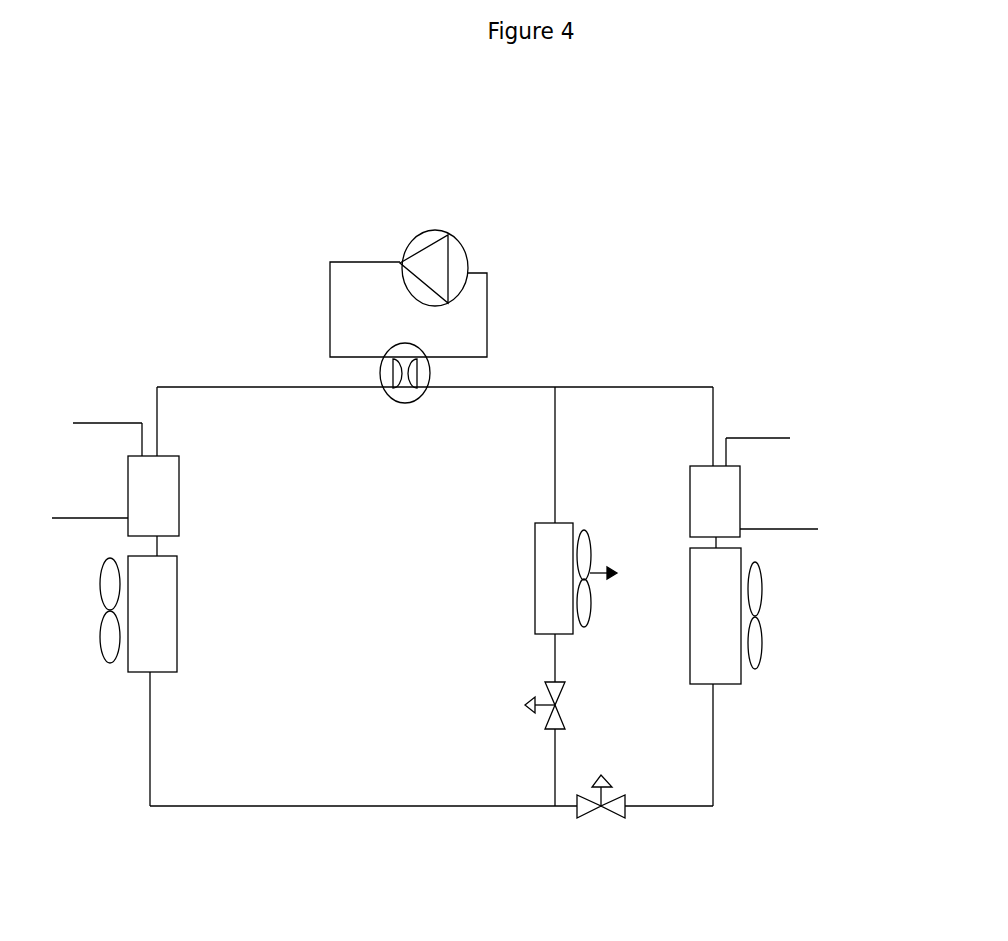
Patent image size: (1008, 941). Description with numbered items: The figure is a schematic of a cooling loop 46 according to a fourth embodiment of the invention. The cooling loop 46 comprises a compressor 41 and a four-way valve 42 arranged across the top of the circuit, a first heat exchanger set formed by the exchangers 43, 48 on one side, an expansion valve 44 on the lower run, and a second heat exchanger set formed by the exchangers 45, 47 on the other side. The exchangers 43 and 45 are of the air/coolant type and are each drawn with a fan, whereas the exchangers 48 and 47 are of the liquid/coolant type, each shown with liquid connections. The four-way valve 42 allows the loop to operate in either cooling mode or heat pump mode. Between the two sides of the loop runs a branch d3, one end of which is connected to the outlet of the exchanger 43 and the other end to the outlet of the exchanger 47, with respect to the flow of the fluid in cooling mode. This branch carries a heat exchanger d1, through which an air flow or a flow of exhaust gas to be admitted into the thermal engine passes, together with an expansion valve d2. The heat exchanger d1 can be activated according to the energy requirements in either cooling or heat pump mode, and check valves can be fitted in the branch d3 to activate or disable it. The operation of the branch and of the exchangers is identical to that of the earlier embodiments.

The compressor 41 is at (486, 250).
The four-way valve 42 is at (426, 409).
The heat exchanger 43 is at (194, 669).
The expansion valve 44 is at (637, 825).
The heat exchanger 45 is at (747, 696).
The cooling loop 46 is at (632, 378).
The heat exchanger 47 is at (753, 509).
The heat exchanger 48 is at (192, 521).
The heat exchanger d1 is at (580, 514).
The expansion valve d2 is at (574, 703).
The branch d3 is at (536, 777).